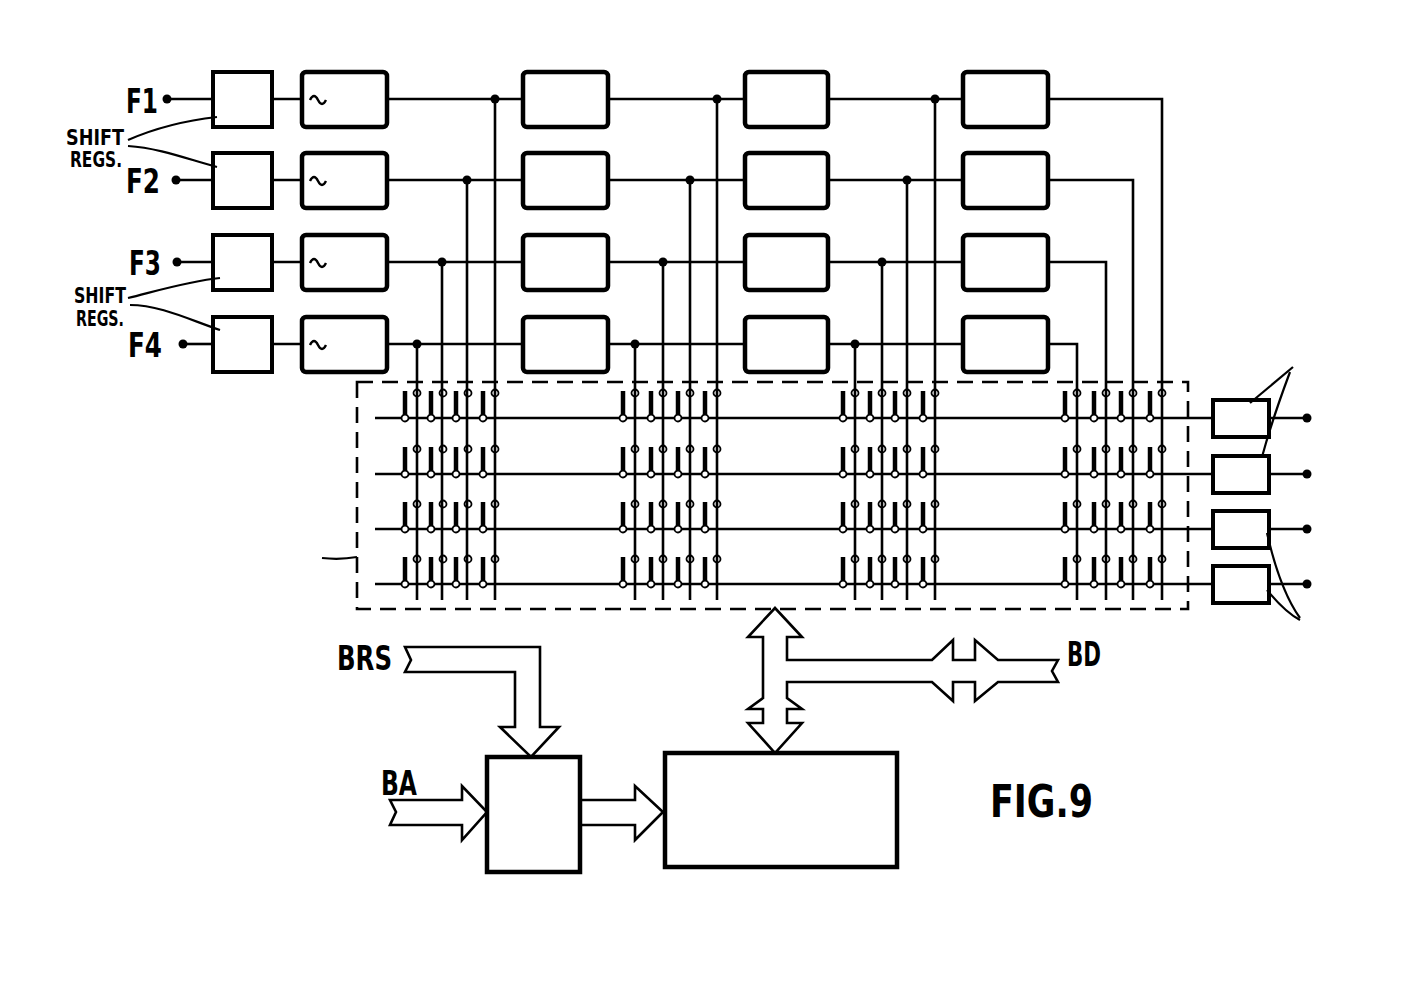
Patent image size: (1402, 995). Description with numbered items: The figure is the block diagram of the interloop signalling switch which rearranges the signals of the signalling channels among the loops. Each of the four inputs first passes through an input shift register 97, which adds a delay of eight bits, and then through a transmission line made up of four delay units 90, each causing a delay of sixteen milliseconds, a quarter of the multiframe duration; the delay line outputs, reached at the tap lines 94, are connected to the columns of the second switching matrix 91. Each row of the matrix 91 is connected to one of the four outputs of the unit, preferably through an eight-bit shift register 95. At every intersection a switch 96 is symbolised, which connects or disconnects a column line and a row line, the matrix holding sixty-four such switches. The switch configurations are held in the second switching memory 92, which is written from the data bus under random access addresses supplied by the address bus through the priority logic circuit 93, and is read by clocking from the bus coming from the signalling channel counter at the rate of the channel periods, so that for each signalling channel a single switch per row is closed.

The delay units 90 is at (392, 168).
The second switching matrix 91 is at (357, 600).
The second switching memory 92 is at (838, 772).
The priority logic circuit 93 is at (556, 764).
The tap output lines 94 is at (620, 180).
The 8-bit shift register 95 is at (1248, 400).
The switch 96 is at (400, 462).
The input shift register 97 is at (246, 82).